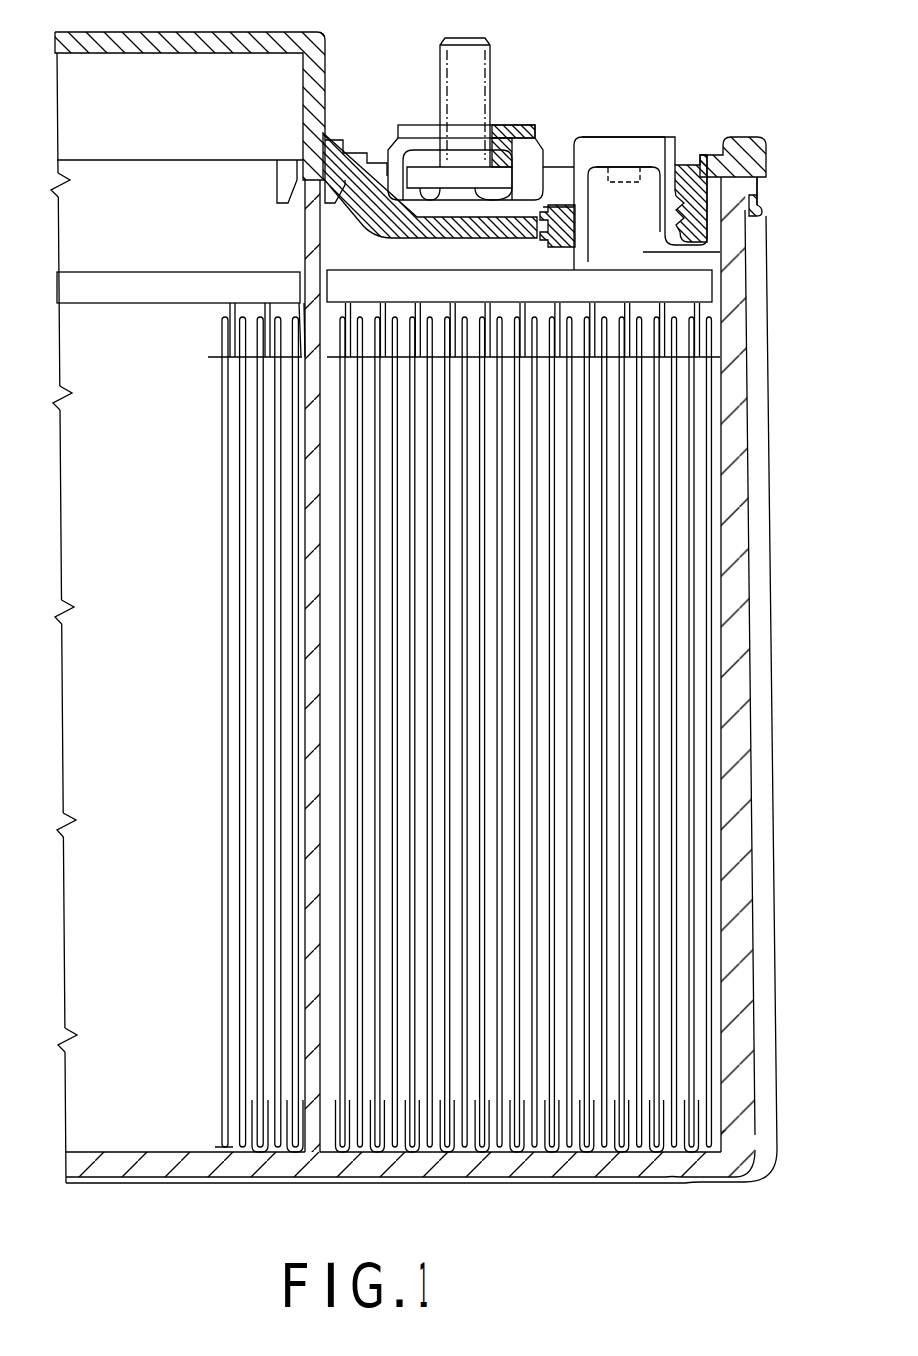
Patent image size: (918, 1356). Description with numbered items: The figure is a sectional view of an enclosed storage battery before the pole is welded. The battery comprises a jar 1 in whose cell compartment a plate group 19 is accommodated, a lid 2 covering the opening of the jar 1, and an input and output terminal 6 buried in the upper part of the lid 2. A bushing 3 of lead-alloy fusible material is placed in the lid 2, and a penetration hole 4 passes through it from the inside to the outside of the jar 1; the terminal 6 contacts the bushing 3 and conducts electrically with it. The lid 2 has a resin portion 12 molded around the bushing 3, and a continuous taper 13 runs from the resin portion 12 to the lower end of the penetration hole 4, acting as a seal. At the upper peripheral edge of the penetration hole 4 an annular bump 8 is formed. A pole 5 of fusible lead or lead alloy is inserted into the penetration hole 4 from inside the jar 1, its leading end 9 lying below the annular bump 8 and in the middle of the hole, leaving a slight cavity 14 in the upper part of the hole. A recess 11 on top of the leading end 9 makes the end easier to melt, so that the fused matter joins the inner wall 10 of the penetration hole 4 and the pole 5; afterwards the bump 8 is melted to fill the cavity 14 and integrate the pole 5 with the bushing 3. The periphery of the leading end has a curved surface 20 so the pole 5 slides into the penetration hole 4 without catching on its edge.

The jar 1 is at (738, 495).
The lid 2 is at (745, 157).
The bushing 3 is at (707, 180).
The penetration hole 4 is at (655, 150).
The pole 5 is at (643, 252).
The input and output terminal 6 is at (465, 92).
The annular bump 8 is at (573, 140).
The leading end 9 is at (590, 160).
The inner wall 10 is at (570, 203).
The recess 11 is at (626, 167).
The resin portion 12 is at (563, 245).
The taper 13 is at (563, 203).
The cavity 14 is at (610, 155).
The plate group 19 is at (632, 748).
The curved surface 20 is at (685, 175).